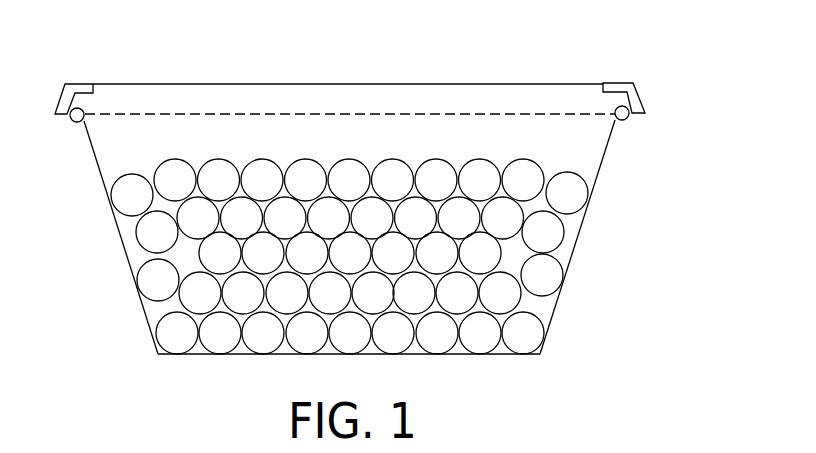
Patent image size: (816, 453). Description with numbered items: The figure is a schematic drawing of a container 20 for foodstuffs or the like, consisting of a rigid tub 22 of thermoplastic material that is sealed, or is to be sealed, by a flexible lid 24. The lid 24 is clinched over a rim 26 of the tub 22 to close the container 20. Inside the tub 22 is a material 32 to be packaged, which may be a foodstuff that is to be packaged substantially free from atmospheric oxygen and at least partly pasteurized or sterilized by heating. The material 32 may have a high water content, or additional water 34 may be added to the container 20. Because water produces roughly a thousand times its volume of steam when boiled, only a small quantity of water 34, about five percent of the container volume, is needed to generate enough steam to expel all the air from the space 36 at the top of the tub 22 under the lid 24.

The container 20 is at (379, 210).
The tub 22 is at (381, 262).
The lid 24 is at (190, 96).
The rim 26 is at (623, 120).
The material 32 is at (157, 279).
The water 34 is at (157, 354).
The space 36 is at (580, 143).